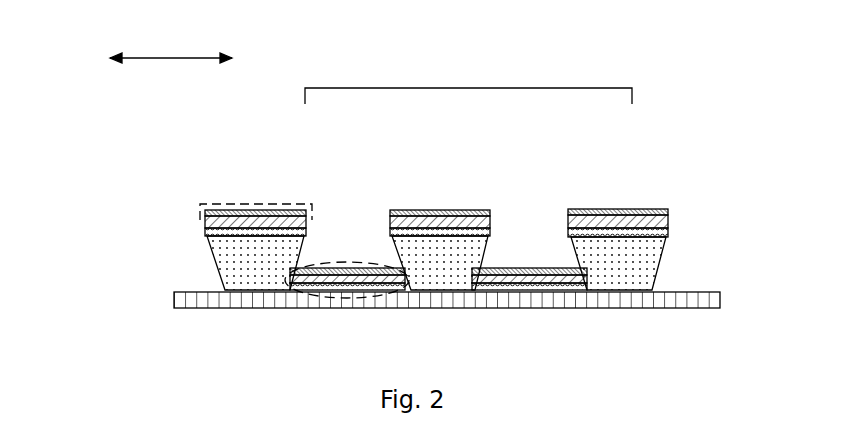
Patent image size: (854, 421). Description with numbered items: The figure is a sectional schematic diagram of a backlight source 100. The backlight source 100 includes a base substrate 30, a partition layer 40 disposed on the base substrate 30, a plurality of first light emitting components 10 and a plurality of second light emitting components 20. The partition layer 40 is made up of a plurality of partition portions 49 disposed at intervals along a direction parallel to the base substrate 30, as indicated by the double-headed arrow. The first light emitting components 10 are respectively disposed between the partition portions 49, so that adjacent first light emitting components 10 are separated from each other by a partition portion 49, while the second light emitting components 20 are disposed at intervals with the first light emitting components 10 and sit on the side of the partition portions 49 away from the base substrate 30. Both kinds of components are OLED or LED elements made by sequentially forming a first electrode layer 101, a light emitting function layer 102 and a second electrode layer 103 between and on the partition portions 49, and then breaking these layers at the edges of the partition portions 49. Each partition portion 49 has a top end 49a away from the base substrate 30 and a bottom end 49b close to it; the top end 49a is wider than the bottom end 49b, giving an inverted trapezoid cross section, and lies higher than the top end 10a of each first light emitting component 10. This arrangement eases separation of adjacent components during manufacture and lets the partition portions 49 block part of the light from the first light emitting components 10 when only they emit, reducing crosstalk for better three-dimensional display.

The backlight source 100 is at (737, 54).
The partition layer 40 is at (478, 88).
The partition portion 49 is at (268, 272).
The top end of partition portion 49a is at (636, 237).
The bottom end of partition portion 49b is at (617, 268).
The first electrode layer 101 is at (600, 237).
The light emitting function layer 102 is at (347, 270).
The second electrode layer 103 is at (368, 268).
The first light emitting component 10 is at (334, 293).
The top end of first light emitting component 10a is at (505, 268).
The second light emitting component 20 is at (205, 212).
The base substrate 30 is at (197, 300).